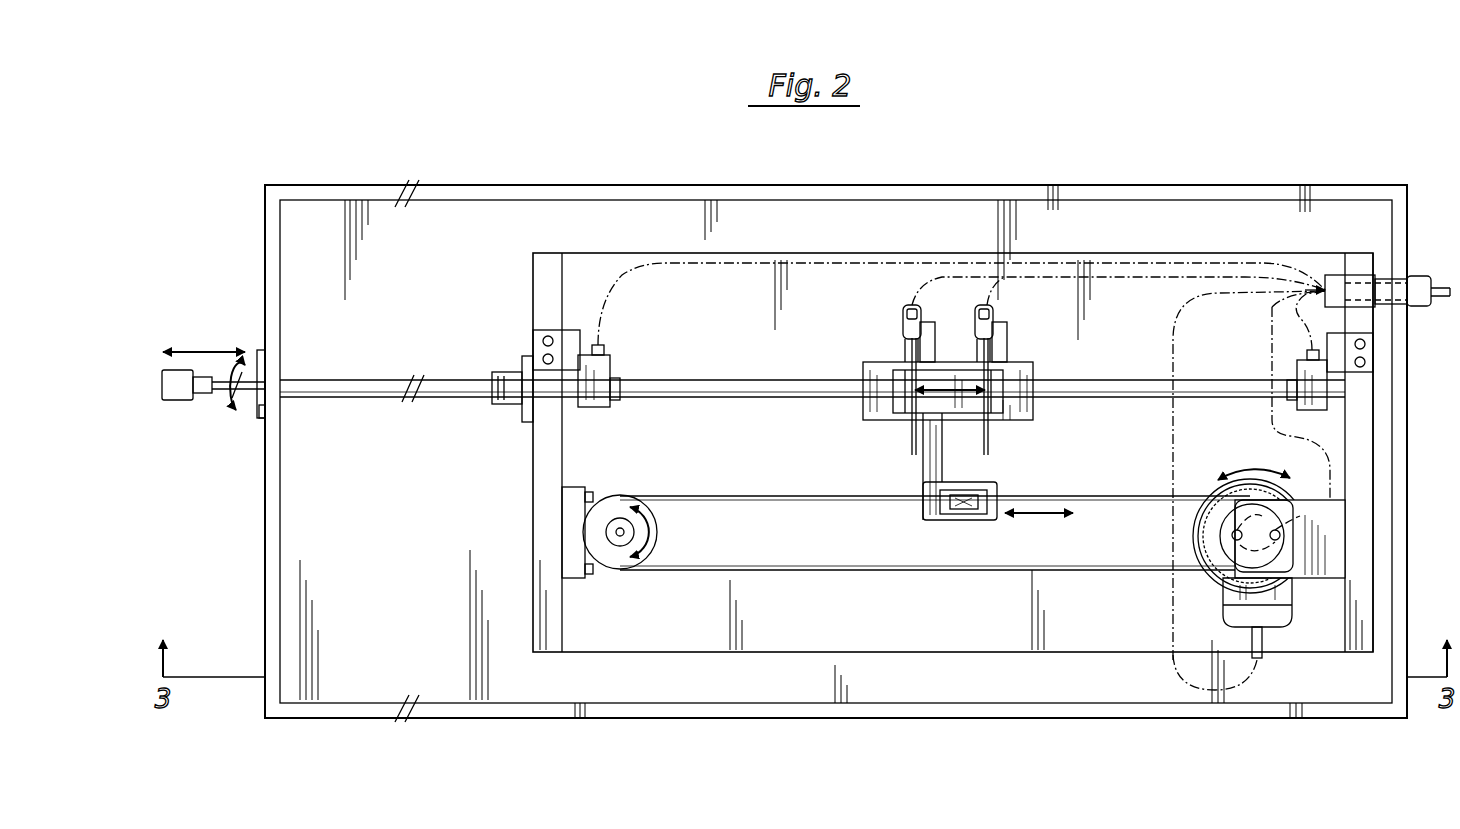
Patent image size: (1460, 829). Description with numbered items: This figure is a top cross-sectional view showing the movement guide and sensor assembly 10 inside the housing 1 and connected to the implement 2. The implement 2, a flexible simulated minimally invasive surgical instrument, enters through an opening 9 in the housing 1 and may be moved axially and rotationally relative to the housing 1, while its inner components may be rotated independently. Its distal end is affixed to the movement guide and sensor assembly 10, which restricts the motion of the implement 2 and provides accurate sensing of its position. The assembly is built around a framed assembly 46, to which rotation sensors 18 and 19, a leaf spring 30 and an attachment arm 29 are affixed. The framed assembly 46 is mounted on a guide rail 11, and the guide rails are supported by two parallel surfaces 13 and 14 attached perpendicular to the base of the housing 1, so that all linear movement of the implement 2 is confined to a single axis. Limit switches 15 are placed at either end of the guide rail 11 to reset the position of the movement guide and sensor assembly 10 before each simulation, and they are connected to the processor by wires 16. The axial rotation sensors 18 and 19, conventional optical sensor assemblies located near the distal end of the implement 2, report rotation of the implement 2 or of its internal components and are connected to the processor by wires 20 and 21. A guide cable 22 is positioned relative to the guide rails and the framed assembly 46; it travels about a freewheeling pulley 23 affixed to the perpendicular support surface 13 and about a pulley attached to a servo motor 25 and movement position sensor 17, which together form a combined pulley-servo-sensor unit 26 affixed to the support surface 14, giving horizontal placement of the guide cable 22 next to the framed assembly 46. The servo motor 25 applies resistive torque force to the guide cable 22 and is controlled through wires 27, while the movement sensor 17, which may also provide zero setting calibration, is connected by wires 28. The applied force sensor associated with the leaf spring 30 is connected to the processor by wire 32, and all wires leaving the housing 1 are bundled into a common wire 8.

The housing 1 is at (366, 182).
The implement 2 is at (216, 390).
The common wire 8 is at (1438, 290).
The opening 9 is at (256, 402).
The movement guide and sensor assembly 10 is at (905, 377).
The guide rail 11 is at (739, 382).
The perpendicular support surface 13 is at (538, 477).
The perpendicular support surface 14 is at (1360, 456).
The limit switch 15 is at (600, 374).
The wires 16 is at (670, 266).
The movement position sensor 17 is at (1268, 613).
The rotation sensor 18 is at (905, 325).
The rotation sensor 19 is at (1000, 336).
The wire 20 is at (932, 274).
The wire 21 is at (993, 292).
The guide cable 22 is at (717, 496).
The freewheeling pulley 23 is at (651, 550).
The servo motor 25 is at (1266, 547).
The pulley-servo-sensor unit 26 is at (1322, 560).
The wires 27 is at (1286, 421).
The wires 28 is at (1173, 620).
The attachment arm 29 is at (924, 459).
The leaf spring 30 is at (968, 497).
The wire 32 is at (924, 513).
The framed assembly 46 is at (1014, 420).